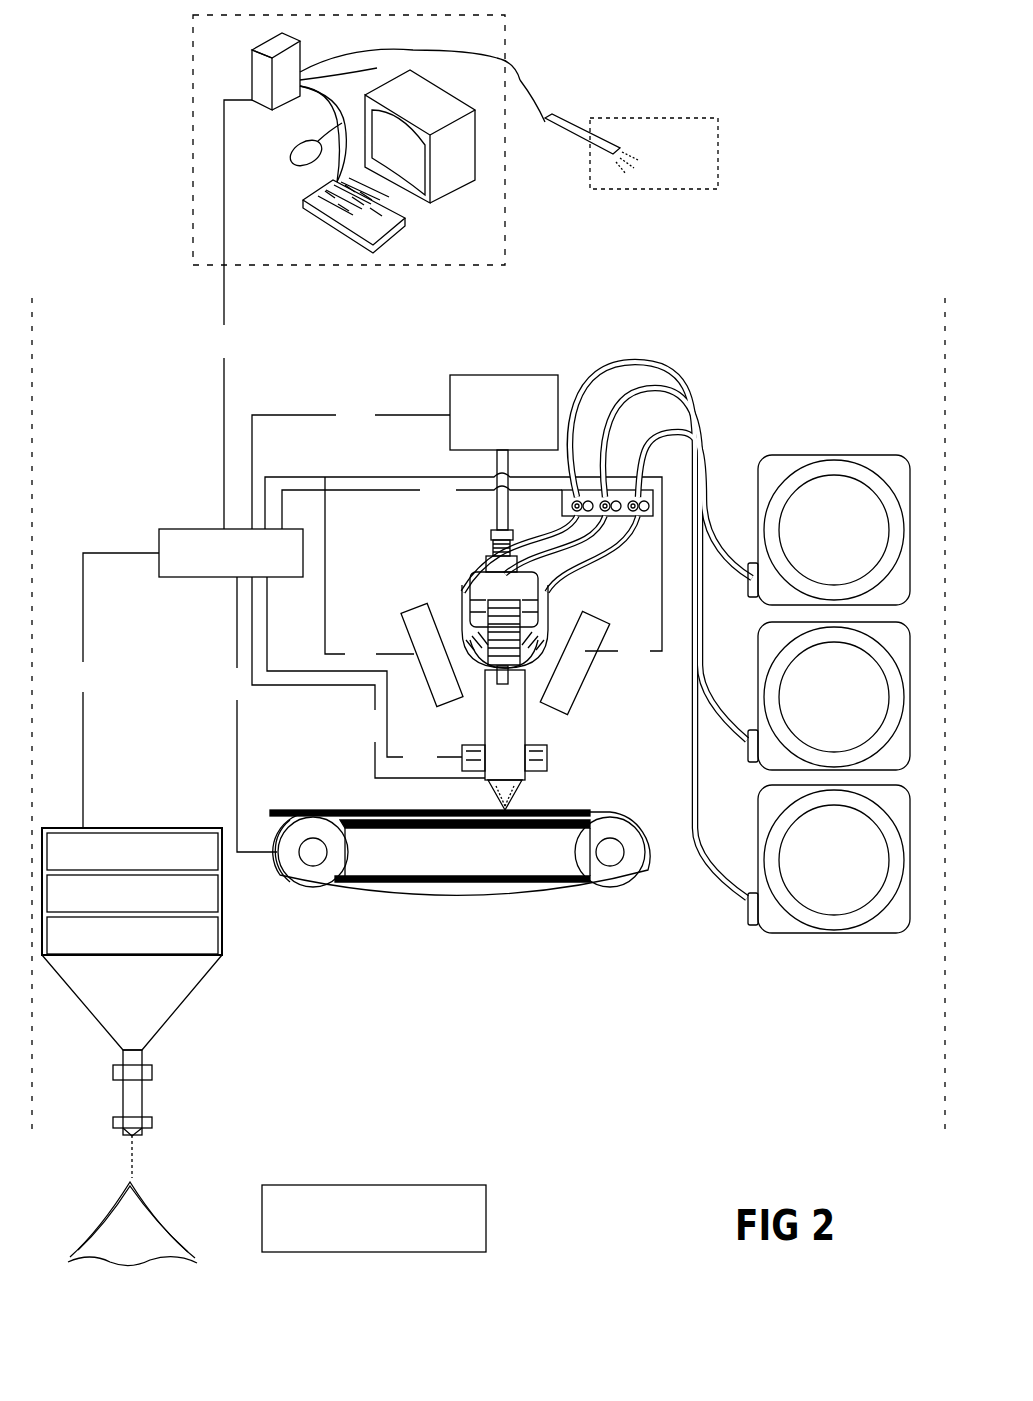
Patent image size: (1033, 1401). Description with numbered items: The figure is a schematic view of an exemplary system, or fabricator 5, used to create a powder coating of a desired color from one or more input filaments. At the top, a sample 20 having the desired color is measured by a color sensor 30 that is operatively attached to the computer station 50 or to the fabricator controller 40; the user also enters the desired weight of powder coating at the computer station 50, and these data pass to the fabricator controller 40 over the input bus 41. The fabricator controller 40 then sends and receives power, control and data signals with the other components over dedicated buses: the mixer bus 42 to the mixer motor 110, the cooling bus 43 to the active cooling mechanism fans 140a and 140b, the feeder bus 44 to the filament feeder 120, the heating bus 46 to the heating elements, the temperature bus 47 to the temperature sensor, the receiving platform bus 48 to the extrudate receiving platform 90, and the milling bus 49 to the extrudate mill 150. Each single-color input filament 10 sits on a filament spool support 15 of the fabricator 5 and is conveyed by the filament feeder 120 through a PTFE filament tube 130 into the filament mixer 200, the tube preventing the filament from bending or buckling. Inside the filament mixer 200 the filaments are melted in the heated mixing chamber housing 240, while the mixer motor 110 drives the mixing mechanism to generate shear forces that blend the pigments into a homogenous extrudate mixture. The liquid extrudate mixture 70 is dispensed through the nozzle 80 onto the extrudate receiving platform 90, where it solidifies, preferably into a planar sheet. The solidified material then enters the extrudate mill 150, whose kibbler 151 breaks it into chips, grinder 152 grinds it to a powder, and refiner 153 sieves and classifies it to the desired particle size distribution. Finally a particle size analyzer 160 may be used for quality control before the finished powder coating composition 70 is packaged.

The fabricator 5 is at (838, 290).
The input filament 10 is at (660, 372).
The filament spool support 15 is at (806, 915).
The sample 20 is at (685, 150).
The color sensor 30 is at (558, 118).
The fabricator controller 40 is at (160, 526).
The input bus 41 is at (230, 314).
The mixer bus 42 is at (351, 464).
The cooling bus 43 is at (463, 572).
The feeder bus 44 is at (422, 502).
The heating bus 46 is at (407, 675).
The temperature bus 47 is at (368, 677).
The receiving platform bus 48 is at (250, 714).
The milling bus 49 is at (114, 690).
The computer station 50 is at (177, 78).
The extrudate mixture / powder coating composition 70 is at (326, 812).
The nozzle 80 is at (515, 791).
The extrudate receiving platform 90 is at (597, 815).
The mixer motor 110 is at (501, 374).
The filament feeder 120 is at (640, 520).
The filament tube 130 is at (568, 562).
The active cooling mechanism fan 140a is at (415, 622).
The active cooling mechanism fan 140b is at (574, 670).
The extrudate mill 150 is at (140, 824).
The kibbler 151 is at (205, 864).
The grinder 152 is at (205, 900).
The refiner 153 is at (205, 940).
The particle size analyzer 160 is at (487, 1216).
The filament mixer 200 is at (476, 596).
The mixing chamber housing 240 is at (538, 723).